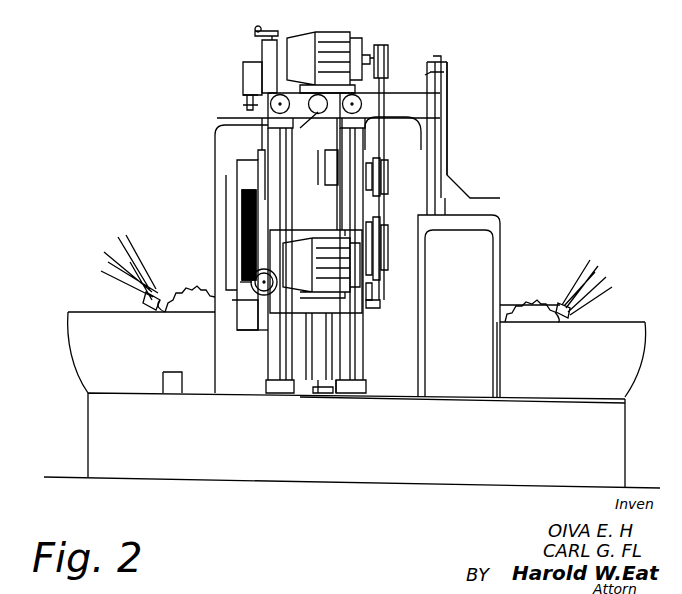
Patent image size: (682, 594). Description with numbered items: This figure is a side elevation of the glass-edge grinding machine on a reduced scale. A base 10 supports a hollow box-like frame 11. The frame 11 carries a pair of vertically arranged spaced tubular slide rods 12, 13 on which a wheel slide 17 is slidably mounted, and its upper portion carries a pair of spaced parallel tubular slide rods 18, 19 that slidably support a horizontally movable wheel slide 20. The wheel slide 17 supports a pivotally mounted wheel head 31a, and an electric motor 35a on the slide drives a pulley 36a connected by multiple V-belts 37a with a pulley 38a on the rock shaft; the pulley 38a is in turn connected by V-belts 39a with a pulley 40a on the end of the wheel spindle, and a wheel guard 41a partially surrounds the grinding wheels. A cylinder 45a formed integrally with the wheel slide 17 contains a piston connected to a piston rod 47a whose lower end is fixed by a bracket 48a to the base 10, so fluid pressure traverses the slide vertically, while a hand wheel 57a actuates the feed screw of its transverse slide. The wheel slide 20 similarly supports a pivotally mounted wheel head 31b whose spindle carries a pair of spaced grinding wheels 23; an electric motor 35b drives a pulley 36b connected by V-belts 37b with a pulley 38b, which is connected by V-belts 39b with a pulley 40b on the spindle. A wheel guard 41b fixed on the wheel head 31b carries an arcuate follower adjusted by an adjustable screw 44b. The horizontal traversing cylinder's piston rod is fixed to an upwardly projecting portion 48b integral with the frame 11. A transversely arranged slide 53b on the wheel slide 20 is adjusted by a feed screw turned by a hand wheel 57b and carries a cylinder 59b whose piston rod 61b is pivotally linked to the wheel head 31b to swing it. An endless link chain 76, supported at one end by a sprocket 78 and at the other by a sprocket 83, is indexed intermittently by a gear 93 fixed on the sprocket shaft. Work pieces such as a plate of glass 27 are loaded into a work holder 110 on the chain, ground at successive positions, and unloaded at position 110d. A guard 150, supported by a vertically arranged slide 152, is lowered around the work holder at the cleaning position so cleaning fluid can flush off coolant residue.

The base 10 is at (88, 430).
The hollow box-like frame 11 is at (222, 205).
The tubular slide rod 12 is at (282, 140).
The tubular slide rod 13 is at (335, 143).
The wheel slide 17 is at (283, 302).
The tubular slide rod 18 is at (283, 100).
The tubular slide rod 19 is at (356, 103).
The wheel slide 20 is at (328, 118).
The grinding wheels 23 is at (248, 228).
The workpiece 27 is at (250, 251).
The wheel head 31a is at (306, 218).
The wheel head 31b is at (262, 163).
The electric motor 35a is at (333, 278).
The electric motor 35b is at (332, 42).
The pulley 36a is at (381, 262).
The pulley 36b is at (400, 49).
The V-belts 37a is at (450, 267).
The V-belts 37b is at (386, 82).
The pulley 38a is at (381, 235).
The pulley 38b is at (381, 165).
The V-belts 39a is at (375, 288).
The V-belts 39b is at (373, 180).
The pulley 40a is at (378, 305).
The pulley 40b is at (373, 200).
The wheel guard 41a is at (248, 316).
The wheel guard 41b is at (258, 178).
The adjustable screw 44b is at (240, 190).
The cylinder 45a is at (318, 340).
The piston rod 47a is at (340, 390).
The bracket 48a is at (318, 395).
The upwardly projecting portion 48b is at (322, 110).
The transversely arranged slide 53b is at (262, 40).
The hand wheel 57a is at (250, 279).
The hand wheel 57b is at (270, 38).
The cylinder 59b is at (243, 72).
The piston rod 61b is at (246, 100).
The endless link chain 76 is at (165, 280).
The sprocket 78 is at (176, 284).
The sprocket 83 is at (527, 305).
The gear 93 is at (545, 306).
The work holder 110 is at (130, 306).
The work holder position 110d is at (587, 317).
The guard 150 is at (458, 203).
The vertically arranged slide 152 is at (447, 110).